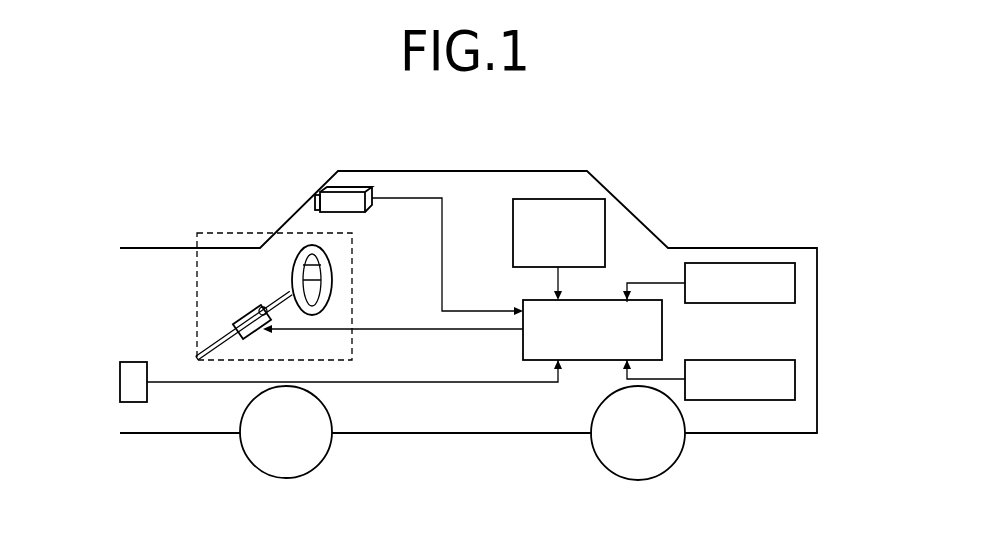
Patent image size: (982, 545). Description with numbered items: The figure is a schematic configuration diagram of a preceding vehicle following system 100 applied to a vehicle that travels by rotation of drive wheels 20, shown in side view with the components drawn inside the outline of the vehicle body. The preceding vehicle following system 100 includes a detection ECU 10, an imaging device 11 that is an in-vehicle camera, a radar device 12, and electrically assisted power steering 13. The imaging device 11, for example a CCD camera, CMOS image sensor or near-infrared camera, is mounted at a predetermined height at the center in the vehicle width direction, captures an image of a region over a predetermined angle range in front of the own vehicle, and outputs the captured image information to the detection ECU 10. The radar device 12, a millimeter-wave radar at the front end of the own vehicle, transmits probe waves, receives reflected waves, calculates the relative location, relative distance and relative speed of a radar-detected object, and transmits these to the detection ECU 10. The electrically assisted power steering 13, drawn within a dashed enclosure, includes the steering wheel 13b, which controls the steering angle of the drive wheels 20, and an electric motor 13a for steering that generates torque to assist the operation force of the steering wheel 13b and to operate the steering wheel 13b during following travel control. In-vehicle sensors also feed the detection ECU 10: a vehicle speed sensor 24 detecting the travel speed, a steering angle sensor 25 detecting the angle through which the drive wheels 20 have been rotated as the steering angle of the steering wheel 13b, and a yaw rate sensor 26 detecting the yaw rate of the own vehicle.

The preceding vehicle following system 100 is at (645, 206).
The detection ECU 10 is at (533, 300).
The imaging device 11 is at (352, 188).
The radar device 12 is at (130, 377).
The electrically assisted power steering 13 is at (215, 225).
The electric motor for steering 13a is at (243, 313).
The steering wheel 13b is at (297, 257).
The drive wheels 20 is at (322, 465).
The vehicle speed sensor 24 is at (797, 282).
The steering angle sensor 25 is at (797, 375).
The yaw rate sensor 26 is at (567, 198).